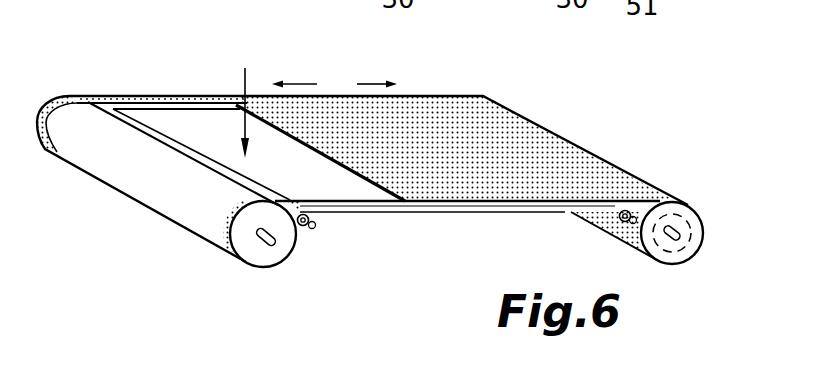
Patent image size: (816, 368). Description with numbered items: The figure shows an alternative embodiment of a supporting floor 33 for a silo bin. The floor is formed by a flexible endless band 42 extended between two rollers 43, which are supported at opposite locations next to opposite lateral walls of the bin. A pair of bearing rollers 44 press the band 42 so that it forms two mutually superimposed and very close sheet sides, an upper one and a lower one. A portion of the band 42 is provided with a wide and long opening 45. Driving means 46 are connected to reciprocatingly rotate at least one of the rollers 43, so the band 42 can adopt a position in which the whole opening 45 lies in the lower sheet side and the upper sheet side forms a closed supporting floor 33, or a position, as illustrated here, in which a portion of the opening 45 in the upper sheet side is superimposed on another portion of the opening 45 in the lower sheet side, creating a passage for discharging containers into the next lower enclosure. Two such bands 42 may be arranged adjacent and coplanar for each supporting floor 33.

The supporting floor 33 is at (332, 74).
The flexible endless band 42 is at (418, 143).
The rollers 43 is at (147, 182).
The bearing rollers 44 is at (312, 222).
The opening 45 is at (200, 132).
The driving means 46 is at (680, 221).